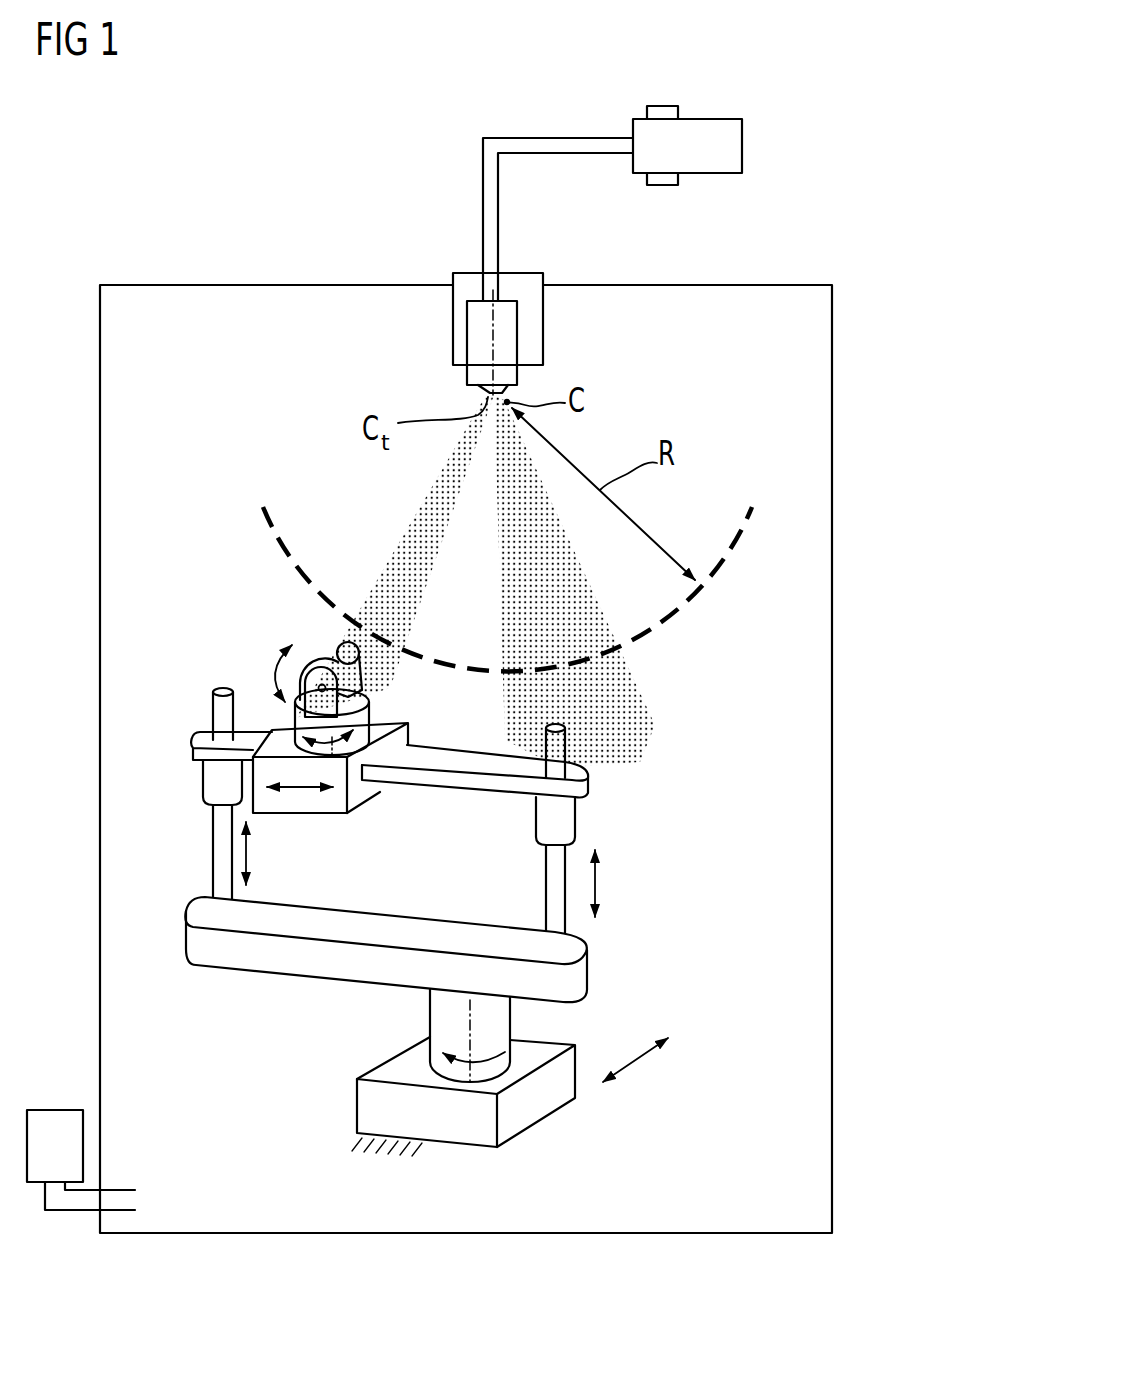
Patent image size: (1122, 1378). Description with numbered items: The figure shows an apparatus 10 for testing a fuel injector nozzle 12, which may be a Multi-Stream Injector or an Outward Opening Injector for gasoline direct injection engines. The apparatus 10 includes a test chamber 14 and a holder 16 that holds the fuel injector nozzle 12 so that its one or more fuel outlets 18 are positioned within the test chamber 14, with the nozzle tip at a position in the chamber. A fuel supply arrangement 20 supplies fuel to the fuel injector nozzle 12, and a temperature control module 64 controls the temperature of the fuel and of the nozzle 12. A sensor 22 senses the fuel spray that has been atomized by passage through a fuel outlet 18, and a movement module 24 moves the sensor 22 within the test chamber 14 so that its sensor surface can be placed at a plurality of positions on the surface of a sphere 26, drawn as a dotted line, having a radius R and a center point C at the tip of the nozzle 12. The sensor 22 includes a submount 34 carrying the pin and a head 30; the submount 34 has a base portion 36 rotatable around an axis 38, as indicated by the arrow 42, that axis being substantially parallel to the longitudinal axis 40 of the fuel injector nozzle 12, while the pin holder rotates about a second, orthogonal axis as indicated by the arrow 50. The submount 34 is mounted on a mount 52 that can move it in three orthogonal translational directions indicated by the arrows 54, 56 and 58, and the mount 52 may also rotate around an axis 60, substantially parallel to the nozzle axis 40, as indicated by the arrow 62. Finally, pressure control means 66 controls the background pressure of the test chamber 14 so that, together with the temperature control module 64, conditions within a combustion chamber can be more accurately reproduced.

The apparatus 10 is at (258, 187).
The fuel injector nozzle 12 is at (517, 325).
The test chamber 14 is at (832, 340).
The holder 16 is at (530, 273).
The fuel outlets 18 is at (480, 395).
The fuel supply arrangement 20 is at (705, 118).
The sensor 22 is at (285, 613).
The movement module 24 is at (188, 740).
The sphere 26 is at (728, 550).
The head 30 is at (359, 655).
The submount 34 is at (372, 718).
The base portion 36 is at (275, 720).
The axis 38 is at (352, 768).
The longitudinal axis 40 is at (467, 325).
The arrow 42 is at (370, 740).
The arrow 50 is at (272, 672).
The mount 52 is at (606, 790).
The arrow 54 is at (298, 790).
The arrow 56 is at (250, 868).
The arrow 58 is at (637, 1063).
The axis 60 is at (430, 1012).
The arrow 62 is at (487, 1058).
The temperature control module 64 is at (664, 185).
The pressure control means 66 is at (55, 1110).